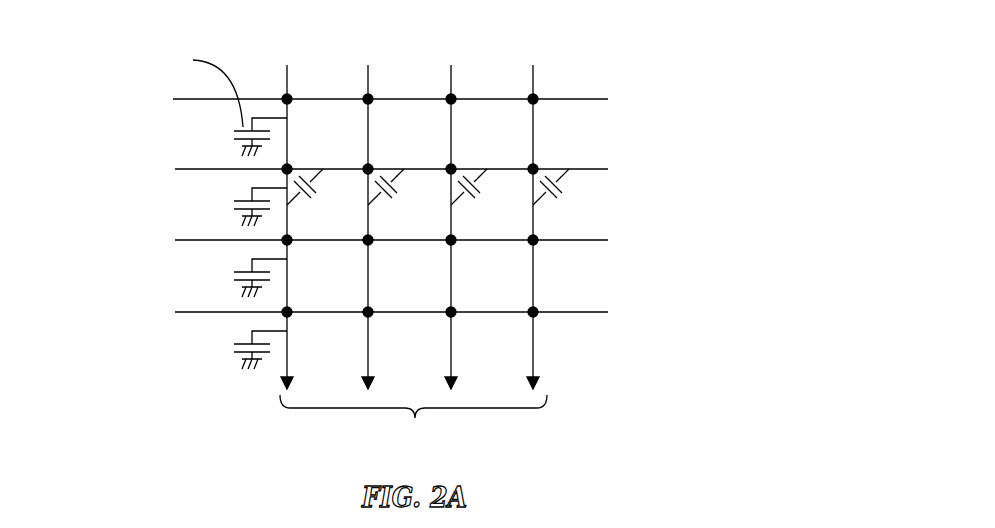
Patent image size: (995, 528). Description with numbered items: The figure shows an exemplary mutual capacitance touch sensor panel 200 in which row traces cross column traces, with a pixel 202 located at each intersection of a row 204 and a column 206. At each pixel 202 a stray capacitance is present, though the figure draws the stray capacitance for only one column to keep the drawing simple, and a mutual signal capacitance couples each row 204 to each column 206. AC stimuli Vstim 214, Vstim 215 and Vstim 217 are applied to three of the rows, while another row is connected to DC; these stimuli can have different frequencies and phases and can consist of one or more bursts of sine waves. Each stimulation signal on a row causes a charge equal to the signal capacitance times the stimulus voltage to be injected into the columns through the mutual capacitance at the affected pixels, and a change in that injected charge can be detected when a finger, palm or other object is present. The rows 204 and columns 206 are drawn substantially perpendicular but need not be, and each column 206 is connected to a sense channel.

The mutual capacitance touch sensor panel 200 is at (512, 38).
The pixel 202 is at (536, 97).
The row 204 is at (583, 169).
The column 206 is at (536, 276).
The Vstim 214 is at (106, 136).
The Vstim 215 is at (106, 206).
The Vstim 217 is at (106, 278).